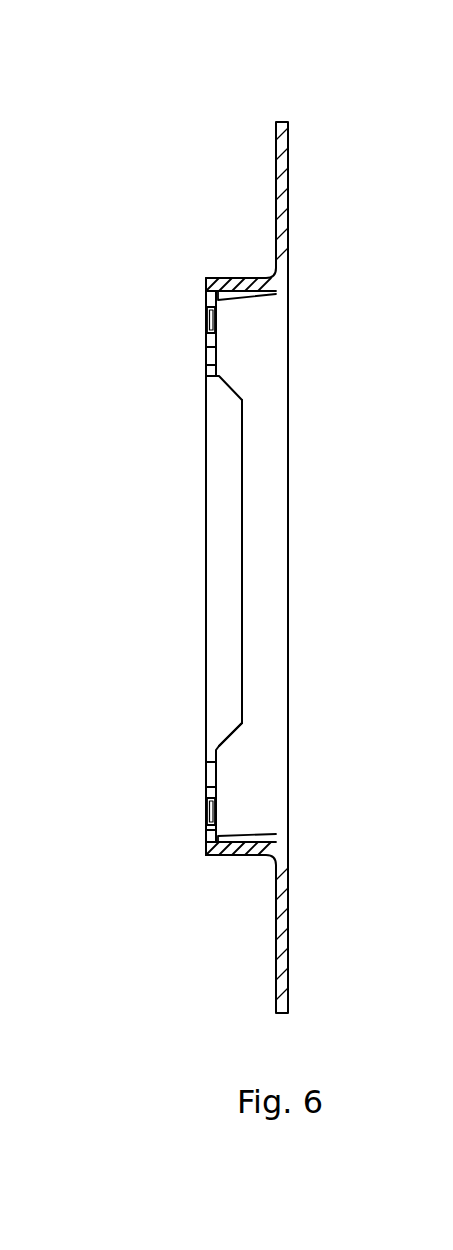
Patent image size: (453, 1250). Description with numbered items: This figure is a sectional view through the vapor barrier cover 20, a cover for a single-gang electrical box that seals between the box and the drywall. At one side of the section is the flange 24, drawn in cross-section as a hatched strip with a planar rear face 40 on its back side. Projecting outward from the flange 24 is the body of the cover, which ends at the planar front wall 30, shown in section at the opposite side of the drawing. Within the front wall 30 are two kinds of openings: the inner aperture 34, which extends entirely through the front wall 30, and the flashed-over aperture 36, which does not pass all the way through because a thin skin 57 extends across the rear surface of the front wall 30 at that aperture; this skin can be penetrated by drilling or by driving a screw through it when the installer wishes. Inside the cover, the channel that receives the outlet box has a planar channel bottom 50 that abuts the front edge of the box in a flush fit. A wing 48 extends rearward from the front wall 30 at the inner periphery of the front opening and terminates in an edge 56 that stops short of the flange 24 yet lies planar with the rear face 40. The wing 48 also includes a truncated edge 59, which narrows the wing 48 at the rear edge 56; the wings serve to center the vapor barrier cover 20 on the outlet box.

The vapor barrier cover 20 is at (192, 137).
The flange 24 is at (283, 157).
The planar rear face 40 is at (301, 211).
The front wall 30 is at (216, 297).
The flashed-over aperture 36 is at (206, 322).
The inner aperture 34 is at (206, 357).
The thin skin 57 is at (217, 320).
The channel bottom 50 is at (217, 338).
The edge 56 is at (242, 475).
The wing 48 is at (225, 565).
The truncated edge 59 is at (228, 737).